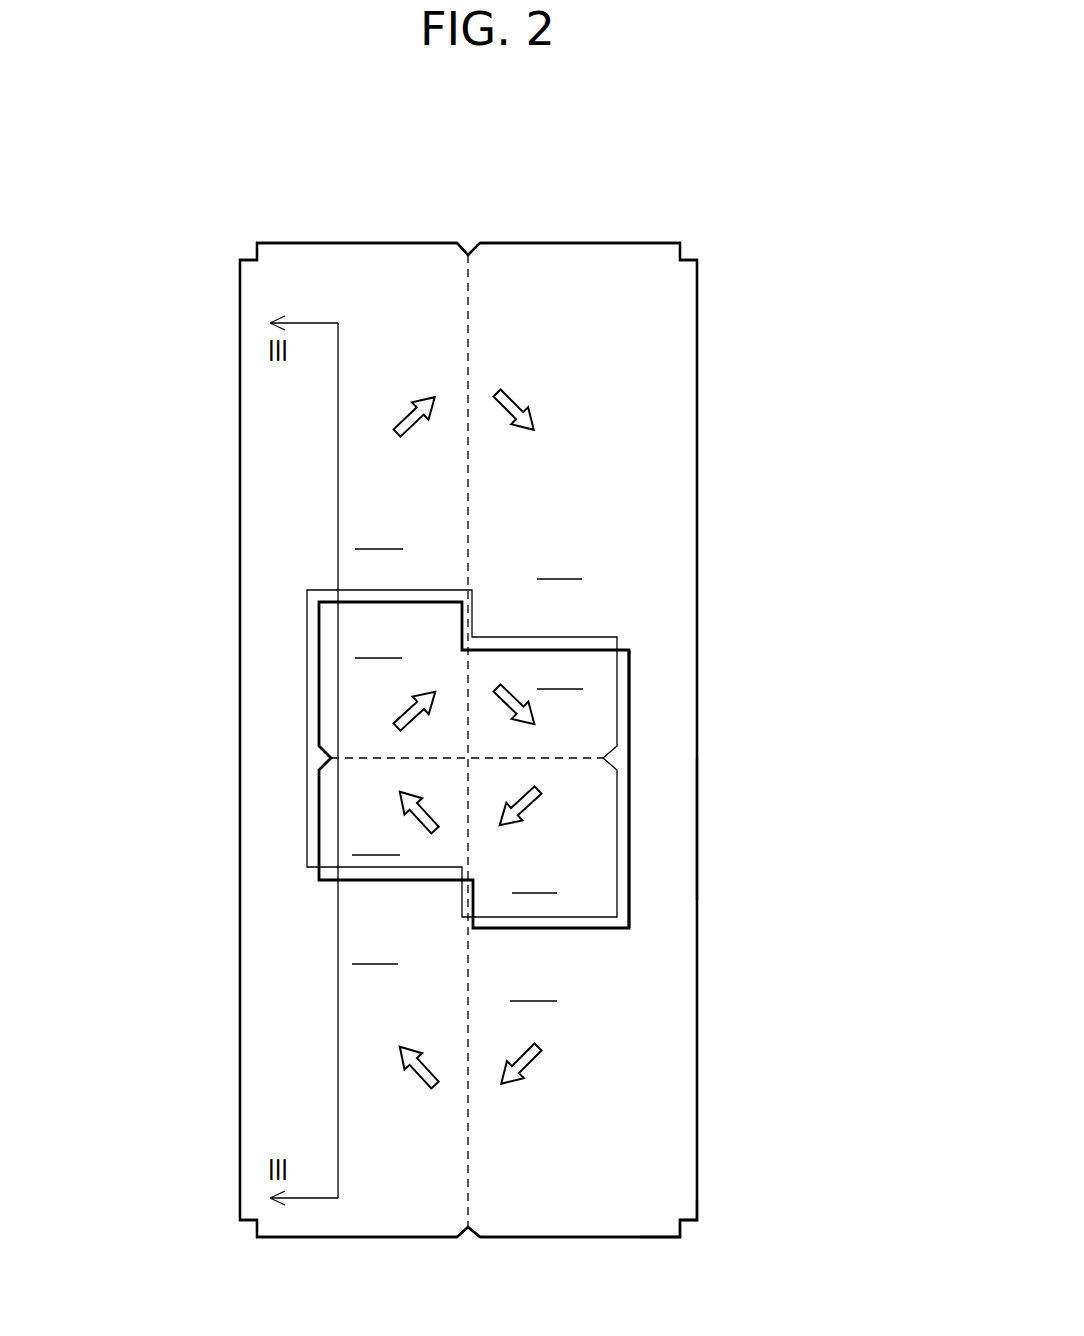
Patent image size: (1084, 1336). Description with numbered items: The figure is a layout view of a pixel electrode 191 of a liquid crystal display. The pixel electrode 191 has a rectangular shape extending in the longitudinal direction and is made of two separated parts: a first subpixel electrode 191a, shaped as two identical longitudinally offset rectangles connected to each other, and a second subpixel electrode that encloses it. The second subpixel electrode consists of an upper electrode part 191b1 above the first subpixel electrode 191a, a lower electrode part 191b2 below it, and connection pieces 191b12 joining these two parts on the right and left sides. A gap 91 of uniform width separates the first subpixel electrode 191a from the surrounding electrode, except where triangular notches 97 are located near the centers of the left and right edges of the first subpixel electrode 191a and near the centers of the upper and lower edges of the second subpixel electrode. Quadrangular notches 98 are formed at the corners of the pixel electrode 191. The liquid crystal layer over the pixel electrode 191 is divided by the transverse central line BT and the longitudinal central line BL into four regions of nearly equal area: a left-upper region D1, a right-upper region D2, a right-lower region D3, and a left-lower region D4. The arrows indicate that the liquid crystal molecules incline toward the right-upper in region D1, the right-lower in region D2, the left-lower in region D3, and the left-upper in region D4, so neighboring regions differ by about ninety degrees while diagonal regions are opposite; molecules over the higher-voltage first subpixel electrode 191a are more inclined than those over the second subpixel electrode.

The pixel electrode 191 is at (490, 178).
The upper electrode part 191b1 is at (697, 448).
The lower electrode part 191b2 is at (697, 1097).
The connection pieces 191b12 is at (629, 842).
The first subpixel electrode 191a is at (617, 708).
The notches 97 is at (629, 762).
The gap 91 is at (305, 817).
The notches 98 is at (692, 1222).
The longitudinal central line BL is at (468, 1147).
The transverse central line BT is at (583, 760).
The left-upper region D1 is at (408, 660).
The right-upper region D2 is at (592, 687).
The right-lower region D3 is at (567, 858).
The left-lower region D4 is at (405, 828).